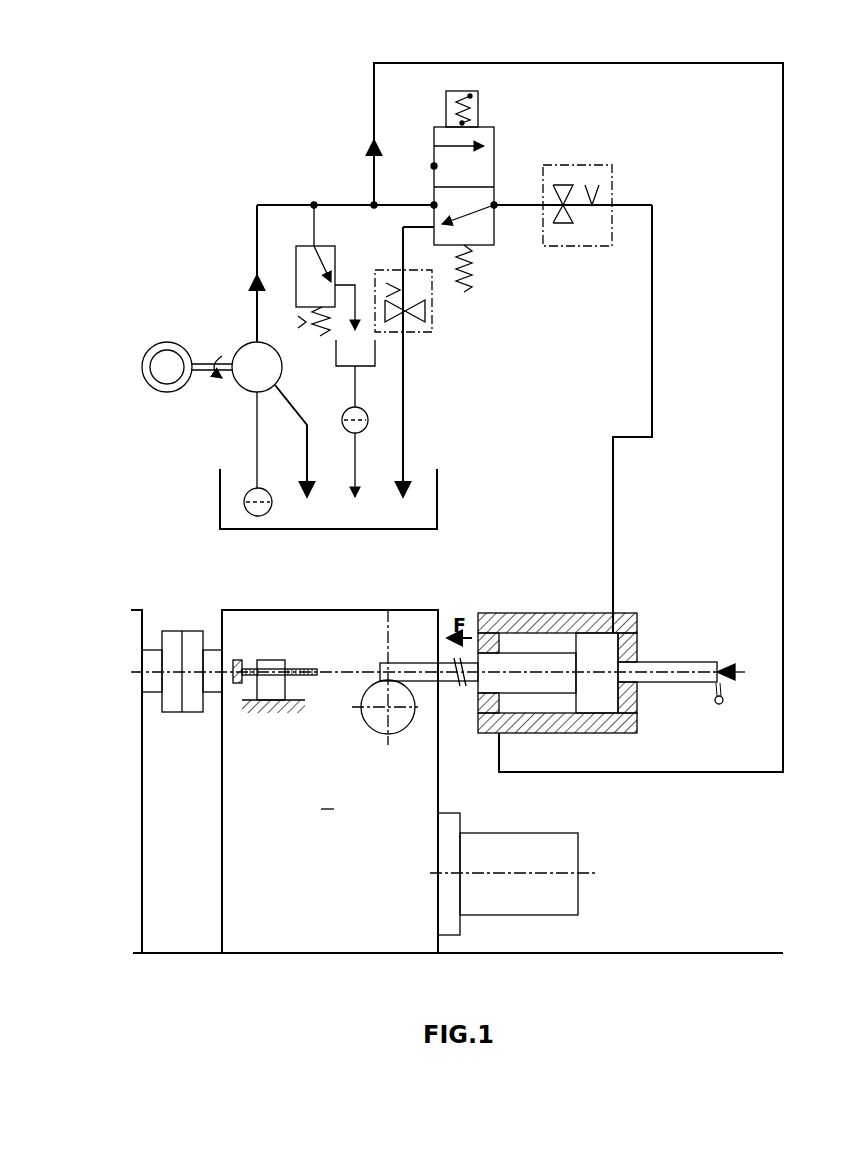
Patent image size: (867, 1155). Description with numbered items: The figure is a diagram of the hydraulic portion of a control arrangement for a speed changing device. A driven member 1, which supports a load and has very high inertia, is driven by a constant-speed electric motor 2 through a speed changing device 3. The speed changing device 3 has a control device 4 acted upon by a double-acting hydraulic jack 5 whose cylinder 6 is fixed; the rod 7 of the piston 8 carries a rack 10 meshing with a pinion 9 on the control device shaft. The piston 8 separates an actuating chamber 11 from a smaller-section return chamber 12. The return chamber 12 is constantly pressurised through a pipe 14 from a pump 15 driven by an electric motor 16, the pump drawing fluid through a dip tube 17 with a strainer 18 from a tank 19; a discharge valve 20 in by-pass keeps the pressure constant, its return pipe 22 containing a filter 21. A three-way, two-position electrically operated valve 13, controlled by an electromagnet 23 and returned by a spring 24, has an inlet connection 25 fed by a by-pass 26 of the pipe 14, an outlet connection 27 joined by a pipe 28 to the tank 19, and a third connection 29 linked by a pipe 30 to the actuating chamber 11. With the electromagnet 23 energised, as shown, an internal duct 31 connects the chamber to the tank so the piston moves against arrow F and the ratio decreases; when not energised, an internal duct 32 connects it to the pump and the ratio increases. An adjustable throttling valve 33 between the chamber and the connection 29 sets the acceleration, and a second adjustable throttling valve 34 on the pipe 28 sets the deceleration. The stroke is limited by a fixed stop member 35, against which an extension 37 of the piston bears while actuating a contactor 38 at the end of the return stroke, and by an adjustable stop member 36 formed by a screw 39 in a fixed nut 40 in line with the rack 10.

The driven member 1 is at (142, 824).
The electric motor 2 is at (507, 856).
The speed changing device 3 is at (330, 781).
The control device 4 is at (377, 736).
The double-acting hydraulic jack 5 is at (582, 655).
The cylinder 6 is at (500, 613).
The piston rod 7 is at (530, 690).
The piston 8 is at (592, 702).
The pinion 9 is at (403, 717).
The rack 10 is at (415, 668).
The actuating chamber 11 is at (637, 640).
The return chamber 12 is at (548, 708).
The electrically operated valve 13 is at (500, 138).
The pipe 14 is at (519, 64).
The pump 15 is at (242, 333).
The electric motor 16 is at (170, 380).
The dip tube 17 is at (261, 437).
The strainer 18 is at (262, 517).
The tank 19 is at (220, 515).
The discharge valve 20 is at (296, 262).
The filter 21 is at (366, 418).
The return pipe 22 is at (352, 382).
The electromagnet 23 is at (446, 100).
The spring 24 is at (472, 283).
The inlet connection 25 is at (432, 204).
The by-pass 26 is at (392, 202).
The outlet connection 27 is at (425, 225).
The pipe 28 is at (407, 424).
The third connection 29 is at (496, 208).
The pipe 30 is at (652, 347).
The internal duct 31 is at (488, 208).
The internal duct 32 is at (452, 150).
The adjustable throttling valve 33 is at (580, 165).
The second adjustable throttling valve 34 is at (432, 318).
The stop member 35 is at (733, 667).
The stop member 36 is at (297, 664).
The extension 37 is at (678, 665).
The contactor 38 is at (714, 704).
The screw 39 is at (308, 671).
The fixed nut 40 is at (282, 688).